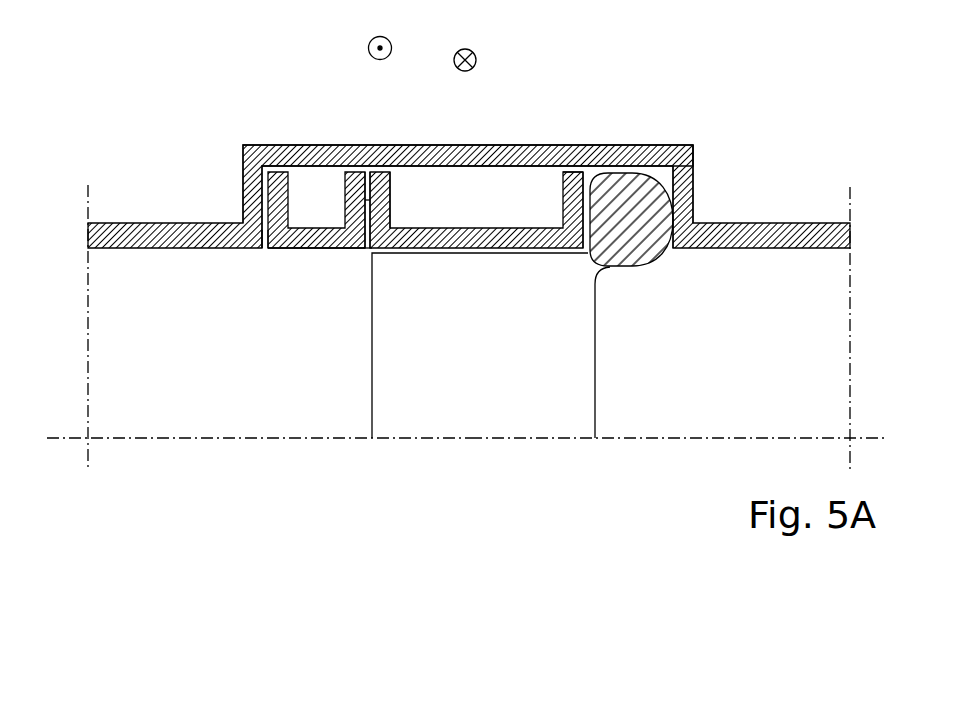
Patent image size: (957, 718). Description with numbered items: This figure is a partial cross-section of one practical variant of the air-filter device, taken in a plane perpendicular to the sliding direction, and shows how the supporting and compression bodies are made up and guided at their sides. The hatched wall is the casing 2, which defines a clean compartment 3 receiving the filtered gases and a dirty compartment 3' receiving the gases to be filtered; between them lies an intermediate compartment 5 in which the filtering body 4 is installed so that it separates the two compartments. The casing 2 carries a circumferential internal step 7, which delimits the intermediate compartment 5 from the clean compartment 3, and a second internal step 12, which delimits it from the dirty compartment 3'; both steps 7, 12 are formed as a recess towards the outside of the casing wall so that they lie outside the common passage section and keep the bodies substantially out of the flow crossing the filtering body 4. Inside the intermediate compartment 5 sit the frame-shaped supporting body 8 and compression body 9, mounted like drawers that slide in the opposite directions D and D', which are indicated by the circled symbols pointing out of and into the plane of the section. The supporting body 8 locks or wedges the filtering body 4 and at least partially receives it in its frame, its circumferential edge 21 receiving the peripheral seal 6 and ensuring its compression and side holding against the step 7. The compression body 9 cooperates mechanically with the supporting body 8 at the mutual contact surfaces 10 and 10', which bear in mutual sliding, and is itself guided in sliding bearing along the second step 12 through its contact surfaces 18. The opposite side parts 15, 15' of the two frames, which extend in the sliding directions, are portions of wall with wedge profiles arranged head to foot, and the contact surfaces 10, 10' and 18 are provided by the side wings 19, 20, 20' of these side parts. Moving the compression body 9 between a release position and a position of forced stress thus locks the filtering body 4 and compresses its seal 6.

The casing 2 is at (163, 233).
The clean compartment 3 is at (679, 360).
The dirty compartment 3' is at (258, 358).
The filtering body 4 is at (483, 418).
The intermediate compartment 5 is at (557, 173).
The peripheral seal 6 is at (660, 223).
The internal step 7 is at (675, 183).
The supporting body 8 is at (476, 161).
The compression body 9 is at (318, 230).
The contact surface 10 is at (388, 158).
The contact surface 10' is at (341, 107).
The second internal step 12 is at (241, 188).
The side part 15 is at (476, 161).
The side part 15' is at (301, 159).
The contact surface 18 is at (262, 248).
The side wing 19 is at (392, 187).
The side wing 20 is at (382, 274).
The side wing 20' is at (316, 296).
The circumferential edge 21 is at (592, 178).
The sliding direction D is at (380, 34).
The sliding direction D' is at (474, 44).